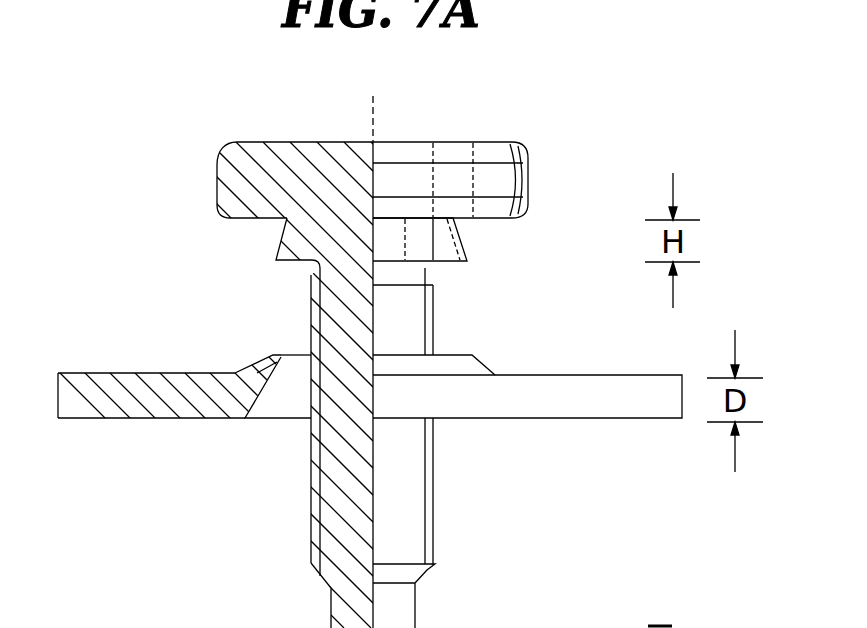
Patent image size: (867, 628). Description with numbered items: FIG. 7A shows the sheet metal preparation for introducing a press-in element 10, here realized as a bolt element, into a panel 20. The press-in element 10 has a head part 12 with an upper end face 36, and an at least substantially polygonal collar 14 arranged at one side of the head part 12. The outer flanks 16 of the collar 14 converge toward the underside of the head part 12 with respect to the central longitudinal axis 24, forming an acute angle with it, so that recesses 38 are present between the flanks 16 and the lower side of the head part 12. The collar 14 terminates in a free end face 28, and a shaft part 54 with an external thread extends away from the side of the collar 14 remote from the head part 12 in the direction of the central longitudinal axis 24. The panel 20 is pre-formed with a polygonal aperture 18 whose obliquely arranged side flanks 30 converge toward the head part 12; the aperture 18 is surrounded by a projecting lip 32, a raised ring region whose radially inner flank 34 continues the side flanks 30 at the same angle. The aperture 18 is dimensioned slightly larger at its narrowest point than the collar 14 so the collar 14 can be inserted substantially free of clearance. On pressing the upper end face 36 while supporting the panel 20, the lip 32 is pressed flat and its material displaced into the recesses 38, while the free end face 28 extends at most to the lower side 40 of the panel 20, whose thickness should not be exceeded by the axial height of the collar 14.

The press-in element 10 is at (553, 137).
The head part 12 is at (528, 184).
The polygonal collar 14 is at (470, 253).
The outer flanks 16 is at (291, 236).
The polygonal aperture 18 is at (291, 412).
The panel 20 is at (100, 372).
The central longitudinal axis 24 is at (377, 102).
The free end face 28 is at (290, 263).
The side flanks 30 is at (263, 408).
The projecting lip 32 is at (258, 364).
The radially inner flank 34 is at (293, 357).
The upper end face 36 is at (274, 141).
The recesses 38 is at (285, 221).
The lower side 40 is at (130, 419).
The shaft part 54 is at (412, 500).